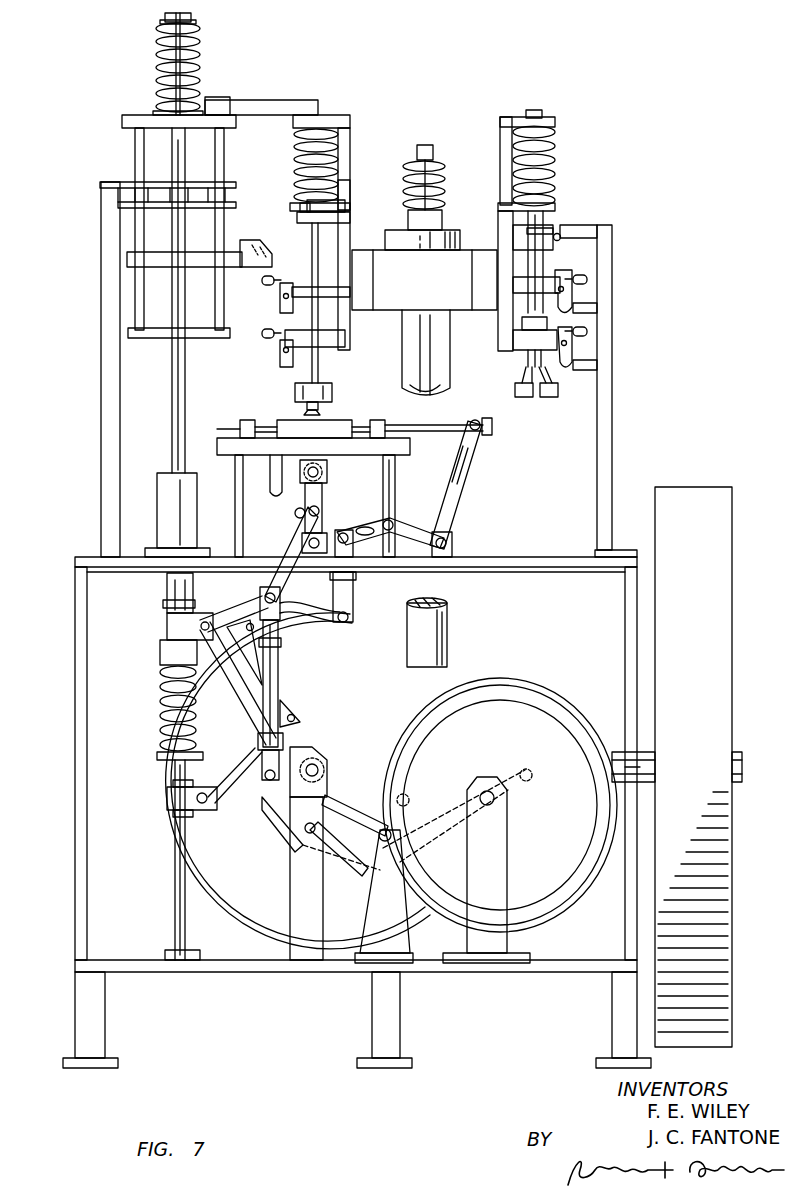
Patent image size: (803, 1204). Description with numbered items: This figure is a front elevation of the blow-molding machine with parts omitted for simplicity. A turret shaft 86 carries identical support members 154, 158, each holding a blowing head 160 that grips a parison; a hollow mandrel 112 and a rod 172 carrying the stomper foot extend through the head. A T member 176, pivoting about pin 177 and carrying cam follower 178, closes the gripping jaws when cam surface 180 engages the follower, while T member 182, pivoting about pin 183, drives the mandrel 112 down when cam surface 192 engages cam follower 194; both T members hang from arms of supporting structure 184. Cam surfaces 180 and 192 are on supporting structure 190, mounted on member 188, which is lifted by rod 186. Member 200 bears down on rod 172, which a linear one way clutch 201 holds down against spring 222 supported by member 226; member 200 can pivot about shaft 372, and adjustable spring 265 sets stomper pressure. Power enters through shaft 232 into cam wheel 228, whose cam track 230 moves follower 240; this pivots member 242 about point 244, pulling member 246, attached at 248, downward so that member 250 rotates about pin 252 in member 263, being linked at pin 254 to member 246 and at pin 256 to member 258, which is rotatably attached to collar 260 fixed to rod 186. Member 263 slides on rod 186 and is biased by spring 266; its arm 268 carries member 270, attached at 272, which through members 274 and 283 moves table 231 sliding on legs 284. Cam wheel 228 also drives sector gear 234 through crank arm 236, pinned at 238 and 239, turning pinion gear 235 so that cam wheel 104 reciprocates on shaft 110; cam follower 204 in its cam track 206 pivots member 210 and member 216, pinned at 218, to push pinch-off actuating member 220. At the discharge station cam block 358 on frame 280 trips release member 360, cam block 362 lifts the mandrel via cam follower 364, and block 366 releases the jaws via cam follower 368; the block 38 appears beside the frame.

The drive housing block 38 is at (683, 541).
The turret shaft 86 is at (417, 363).
The cam wheel 104 is at (367, 694).
The shaft 110 is at (326, 760).
The mandrel 112 is at (345, 322).
The support member 154 is at (364, 278).
The support member 158 is at (472, 292).
The blowing head 160 is at (522, 380).
The rod 172 is at (513, 228).
The T member 176 is at (333, 352).
The pin 177 is at (572, 345).
The cam follower 178 is at (588, 331).
The cam surface 180 is at (304, 222).
The T member 182 is at (560, 270).
The pin 183 is at (567, 290).
The supporting structure 184 is at (498, 330).
The rod 186 is at (172, 424).
The member 188 is at (127, 262).
The supporting structure 190 is at (250, 268).
The cam surface 192 is at (255, 245).
The cam follower 194 is at (588, 279).
The member 200 is at (268, 100).
The linear one way clutch 201 is at (350, 225).
The cam follower 204 is at (357, 594).
The cam track 206 is at (172, 860).
The member 210 is at (392, 523).
The member 216 is at (462, 518).
The pin 218 is at (452, 546).
The pinch-off device actuating member 220 is at (400, 425).
The spring 222 is at (555, 142).
The member 226 is at (350, 126).
The cam wheel 228 is at (474, 733).
The cam track 230 is at (542, 697).
The table 231 is at (222, 437).
The shaft 232 is at (500, 798).
The sector gear 234 is at (272, 850).
The pinion gear 235 is at (316, 756).
The crank arm 236 is at (421, 818).
The pin 238 is at (393, 846).
The pin 239 is at (527, 768).
The follower 240 is at (407, 775).
The member 242 is at (333, 790).
The pivot point 244 is at (337, 803).
The member 246 is at (282, 672).
The pin 248 is at (268, 782).
The member 250 is at (255, 688).
The pin 252 is at (167, 625).
The pin 254 is at (262, 597).
The pin 256 is at (298, 704).
The member 258 is at (258, 742).
The collar 260 is at (204, 812).
The member 263 is at (177, 648).
The adjustable spring 265 is at (156, 55).
The spring 266 is at (160, 714).
The arm 268 is at (282, 642).
The member 270 is at (277, 548).
The attachment point 272 is at (248, 672).
The member 274 is at (327, 540).
The frame 280 is at (101, 494).
The member 283 is at (327, 483).
The legs 284 is at (395, 482).
The cam block 358 is at (598, 226).
The release member 360 is at (558, 233).
The cam block 362 is at (597, 308).
The cam follower 364 is at (288, 308).
The block 366 is at (597, 366).
The cam follower 368 is at (282, 362).
The shaft 372 is at (224, 157).